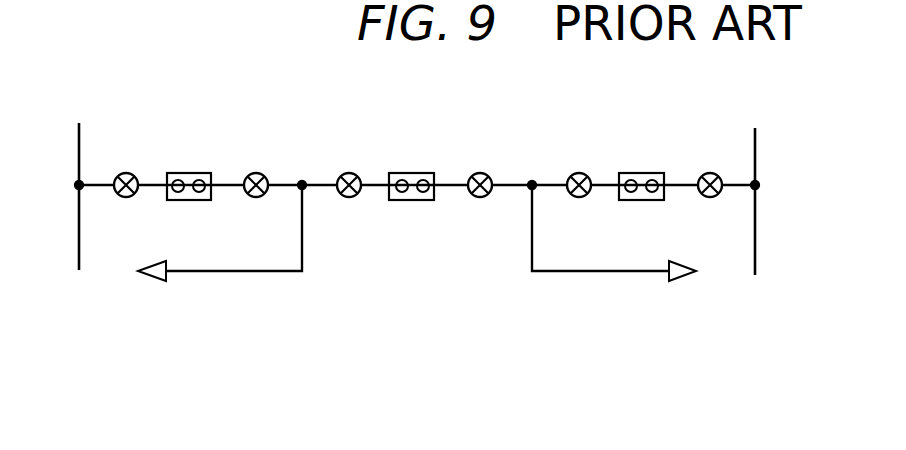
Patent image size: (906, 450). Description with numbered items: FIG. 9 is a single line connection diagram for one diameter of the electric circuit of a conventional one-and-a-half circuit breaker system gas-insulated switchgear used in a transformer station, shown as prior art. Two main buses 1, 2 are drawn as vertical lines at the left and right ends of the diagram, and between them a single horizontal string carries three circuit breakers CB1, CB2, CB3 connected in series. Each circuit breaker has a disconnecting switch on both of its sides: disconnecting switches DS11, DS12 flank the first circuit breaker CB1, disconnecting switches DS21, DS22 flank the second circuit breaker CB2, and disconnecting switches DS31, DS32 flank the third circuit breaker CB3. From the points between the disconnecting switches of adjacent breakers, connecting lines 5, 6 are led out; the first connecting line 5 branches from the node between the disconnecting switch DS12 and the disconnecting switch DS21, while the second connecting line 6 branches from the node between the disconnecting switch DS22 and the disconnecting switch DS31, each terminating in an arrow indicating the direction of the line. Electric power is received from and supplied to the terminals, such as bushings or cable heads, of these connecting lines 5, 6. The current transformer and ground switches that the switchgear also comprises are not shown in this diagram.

The main bus 1 is at (79, 161).
The main bus 2 is at (755, 157).
The connecting line 5 is at (157, 282).
The connecting line 6 is at (681, 282).
The disconnecting switch DS11 is at (126, 172).
The disconnecting switch DS12 is at (255, 172).
The disconnecting switch DS21 is at (349, 172).
The disconnecting switch DS22 is at (479, 172).
The disconnecting switch DS31 is at (578, 172).
The disconnecting switch DS32 is at (709, 172).
The circuit breaker CB1 is at (190, 201).
The circuit breaker CB2 is at (404, 201).
The circuit breaker CB3 is at (637, 201).